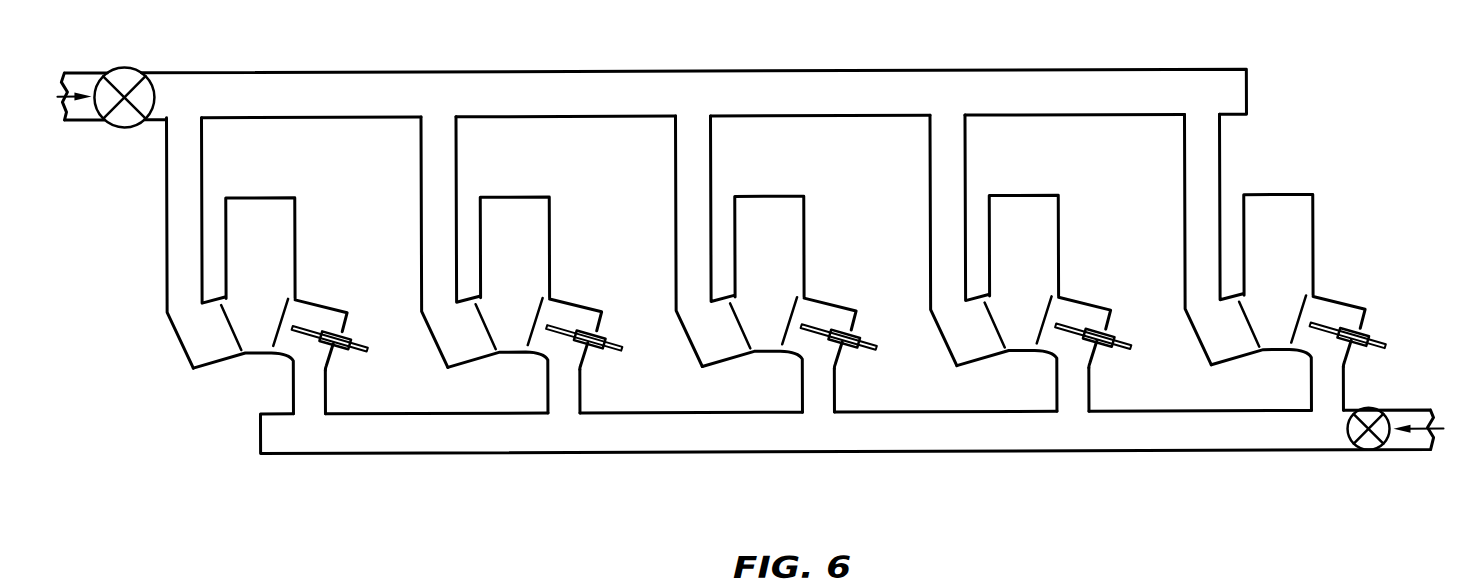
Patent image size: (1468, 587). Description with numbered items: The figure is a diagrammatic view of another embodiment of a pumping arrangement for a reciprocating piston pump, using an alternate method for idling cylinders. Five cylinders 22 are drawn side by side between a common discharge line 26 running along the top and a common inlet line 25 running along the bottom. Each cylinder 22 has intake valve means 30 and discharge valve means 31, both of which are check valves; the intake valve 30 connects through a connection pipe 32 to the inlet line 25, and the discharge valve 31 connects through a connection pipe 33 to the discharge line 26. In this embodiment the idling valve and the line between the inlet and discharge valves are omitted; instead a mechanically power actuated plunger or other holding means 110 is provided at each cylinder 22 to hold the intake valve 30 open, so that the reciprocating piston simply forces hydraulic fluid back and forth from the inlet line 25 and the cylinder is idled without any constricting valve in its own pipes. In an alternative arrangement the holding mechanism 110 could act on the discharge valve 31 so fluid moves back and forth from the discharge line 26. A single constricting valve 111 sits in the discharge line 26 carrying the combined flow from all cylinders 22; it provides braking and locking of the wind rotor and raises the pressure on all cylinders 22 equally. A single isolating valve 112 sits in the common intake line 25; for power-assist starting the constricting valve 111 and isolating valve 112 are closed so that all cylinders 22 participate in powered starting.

The cylinder 22 is at (297, 211).
The inlet line 25 is at (1287, 452).
The discharge line 26 is at (797, 70).
The intake valve means 30 is at (287, 317).
The discharge valve means 31 is at (228, 334).
The connection pipe 32 is at (325, 394).
The connection pipe 33 is at (203, 154).
The mechanically power actuated plunger 110 is at (367, 339).
The constricting valve 111 is at (131, 64).
The isolating valve 112 is at (1390, 444).